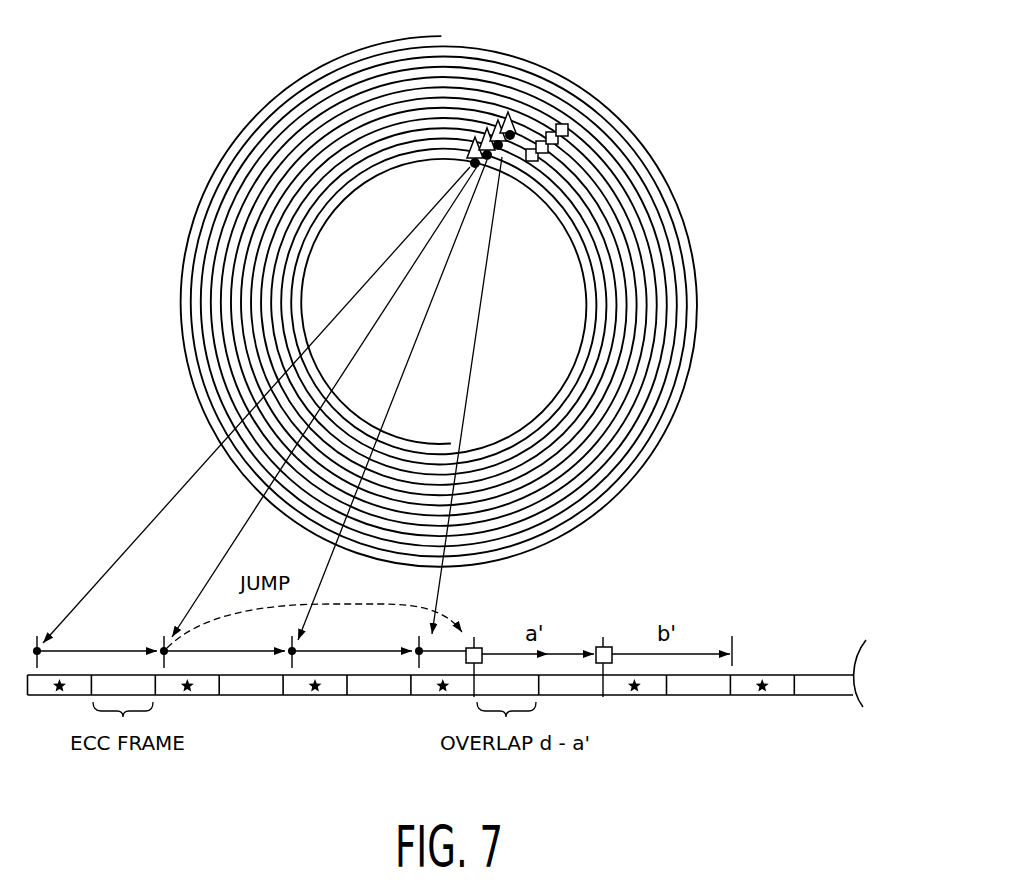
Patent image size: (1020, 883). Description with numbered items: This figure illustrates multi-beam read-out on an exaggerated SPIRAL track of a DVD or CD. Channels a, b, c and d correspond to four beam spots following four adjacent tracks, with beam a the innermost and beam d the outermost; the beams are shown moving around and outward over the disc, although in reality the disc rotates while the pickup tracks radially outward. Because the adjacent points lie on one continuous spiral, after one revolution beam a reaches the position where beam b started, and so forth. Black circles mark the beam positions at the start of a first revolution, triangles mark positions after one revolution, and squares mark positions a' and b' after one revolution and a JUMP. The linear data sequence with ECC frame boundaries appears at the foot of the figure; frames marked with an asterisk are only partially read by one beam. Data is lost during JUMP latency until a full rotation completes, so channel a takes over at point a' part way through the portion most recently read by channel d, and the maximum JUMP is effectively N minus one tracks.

The channel a is at (253, 409).
The channel b is at (322, 406).
The channel c is at (389, 405).
The channel d is at (460, 404).
The jump JUMP is at (528, 120).
The spiral track SPIRAL is at (207, 333).